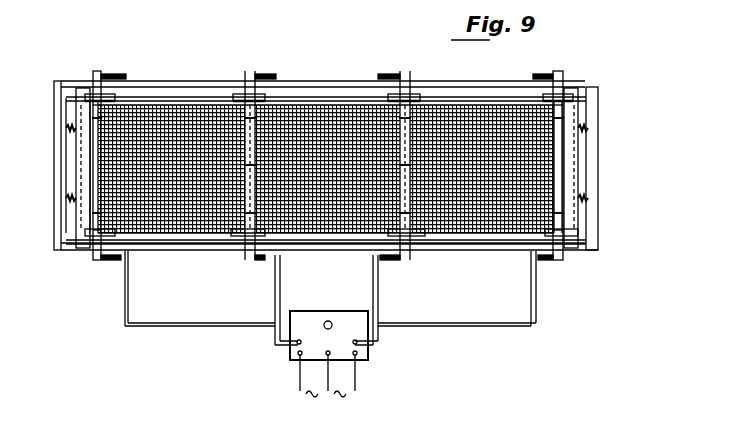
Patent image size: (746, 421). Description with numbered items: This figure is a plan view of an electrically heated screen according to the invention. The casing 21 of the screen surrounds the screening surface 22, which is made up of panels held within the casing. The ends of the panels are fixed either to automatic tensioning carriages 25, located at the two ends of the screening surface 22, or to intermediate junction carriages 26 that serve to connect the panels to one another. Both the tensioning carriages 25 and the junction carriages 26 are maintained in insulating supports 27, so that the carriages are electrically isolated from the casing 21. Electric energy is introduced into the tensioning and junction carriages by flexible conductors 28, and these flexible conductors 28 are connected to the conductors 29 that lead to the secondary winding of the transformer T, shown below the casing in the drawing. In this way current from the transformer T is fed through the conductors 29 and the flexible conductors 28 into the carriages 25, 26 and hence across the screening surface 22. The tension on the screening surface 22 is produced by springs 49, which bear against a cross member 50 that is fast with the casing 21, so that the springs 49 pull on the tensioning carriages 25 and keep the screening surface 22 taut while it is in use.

The casing 21 is at (315, 90).
The screening surface 22 is at (466, 205).
The automatic tensioning carriage 25 is at (85, 130).
The intermediate junction carriage 26 is at (240, 236).
The insulating support 27 is at (83, 87).
The flexible conductor 28 is at (105, 67).
The conductor 29 is at (151, 313).
The spring 49 is at (56, 200).
The cross member 50 is at (72, 168).
The transformer T is at (329, 342).